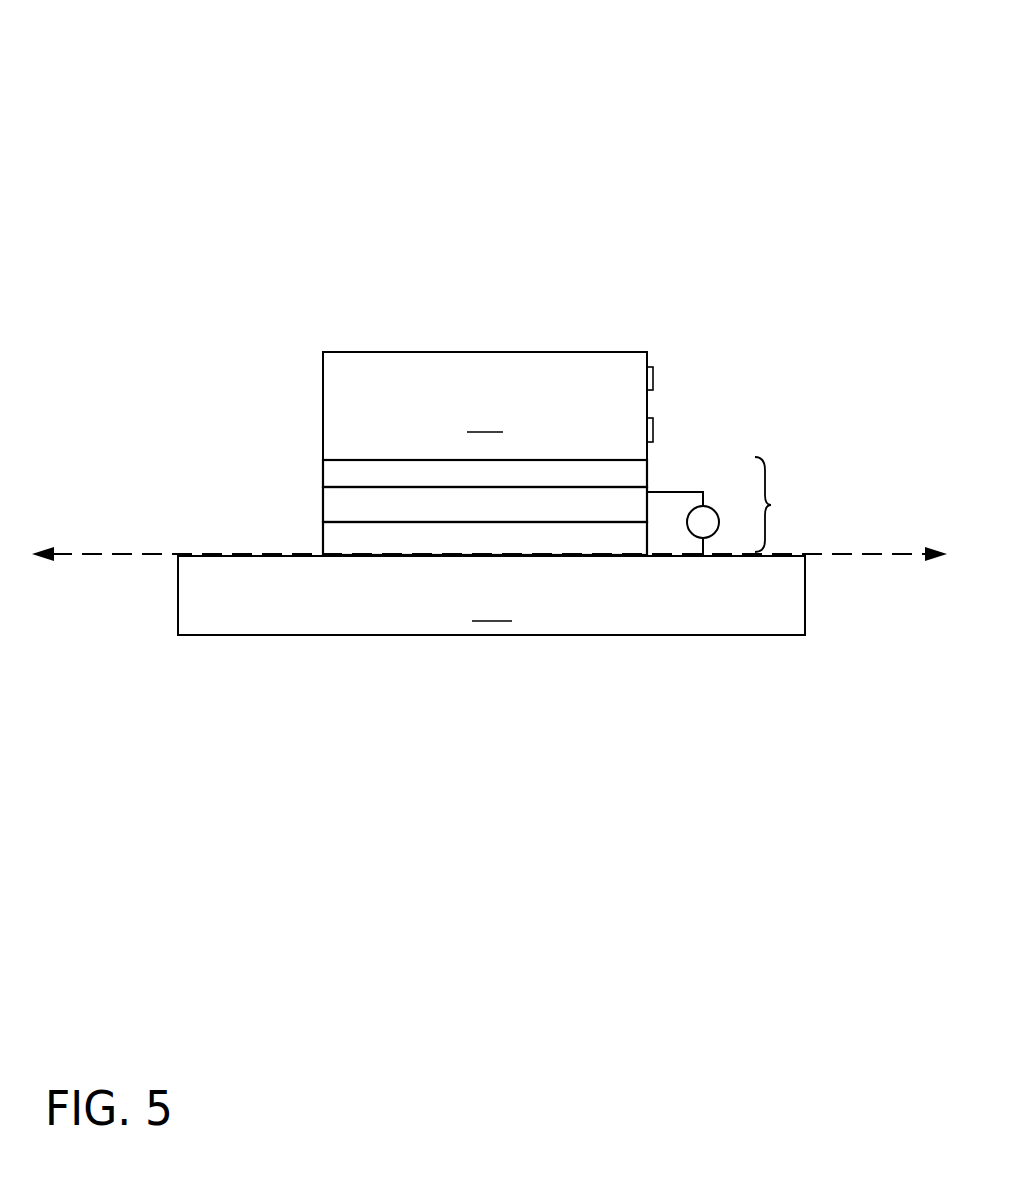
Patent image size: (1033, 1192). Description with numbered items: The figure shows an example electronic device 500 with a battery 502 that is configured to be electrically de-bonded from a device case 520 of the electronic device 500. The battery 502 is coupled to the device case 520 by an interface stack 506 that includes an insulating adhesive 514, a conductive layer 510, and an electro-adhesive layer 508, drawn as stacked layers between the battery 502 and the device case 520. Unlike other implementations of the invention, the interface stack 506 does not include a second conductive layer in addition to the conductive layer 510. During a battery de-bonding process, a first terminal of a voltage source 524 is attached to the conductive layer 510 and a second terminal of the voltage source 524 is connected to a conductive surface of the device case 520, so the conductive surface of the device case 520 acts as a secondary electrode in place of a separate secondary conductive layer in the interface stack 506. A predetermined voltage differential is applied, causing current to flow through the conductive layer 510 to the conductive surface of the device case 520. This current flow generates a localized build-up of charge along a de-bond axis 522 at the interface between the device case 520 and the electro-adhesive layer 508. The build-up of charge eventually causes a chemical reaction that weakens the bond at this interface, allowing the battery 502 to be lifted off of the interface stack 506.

The electronic device 500 is at (145, 81).
The battery 502 is at (488, 406).
The interface stack 506 is at (778, 498).
The electro-adhesive layer 508 is at (323, 538).
The conductive layer 510 is at (323, 492).
The insulating adhesive 514 is at (323, 467).
The device case 520 is at (491, 595).
The de-bond axis 522 is at (92, 553).
The voltage source 524 is at (712, 503).